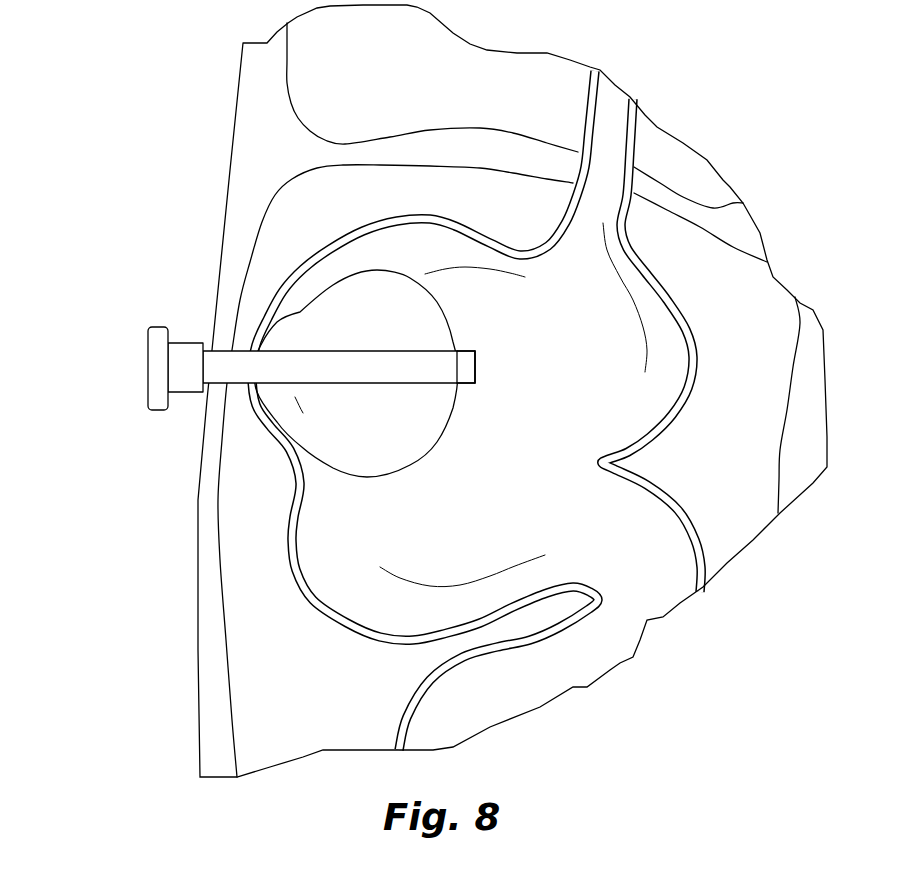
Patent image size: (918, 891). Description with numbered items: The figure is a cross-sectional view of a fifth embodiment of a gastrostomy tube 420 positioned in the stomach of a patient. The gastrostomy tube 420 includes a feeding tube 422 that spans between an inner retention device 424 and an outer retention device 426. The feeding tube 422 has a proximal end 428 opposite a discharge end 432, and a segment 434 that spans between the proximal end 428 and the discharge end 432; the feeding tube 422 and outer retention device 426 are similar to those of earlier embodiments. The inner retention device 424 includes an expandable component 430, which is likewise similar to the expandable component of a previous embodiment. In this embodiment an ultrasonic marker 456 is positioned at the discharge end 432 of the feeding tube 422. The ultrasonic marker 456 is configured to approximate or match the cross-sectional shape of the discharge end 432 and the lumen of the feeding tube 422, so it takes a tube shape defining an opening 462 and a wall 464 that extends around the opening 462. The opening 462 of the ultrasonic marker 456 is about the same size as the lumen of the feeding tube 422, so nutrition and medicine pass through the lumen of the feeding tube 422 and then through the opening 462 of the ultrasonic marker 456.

The gastrostomy tube 420 is at (312, 418).
The feeding tube 422 is at (232, 368).
The inner retention device 424 is at (358, 271).
The outer retention device 426 is at (147, 343).
The proximal end 428 is at (216, 366).
The expandable component 430 is at (348, 423).
The discharge end 432 is at (442, 385).
The segment 434 is at (337, 351).
The ultrasonic marker 456 is at (467, 370).
The opening 462 is at (477, 363).
The wall 464 is at (461, 351).